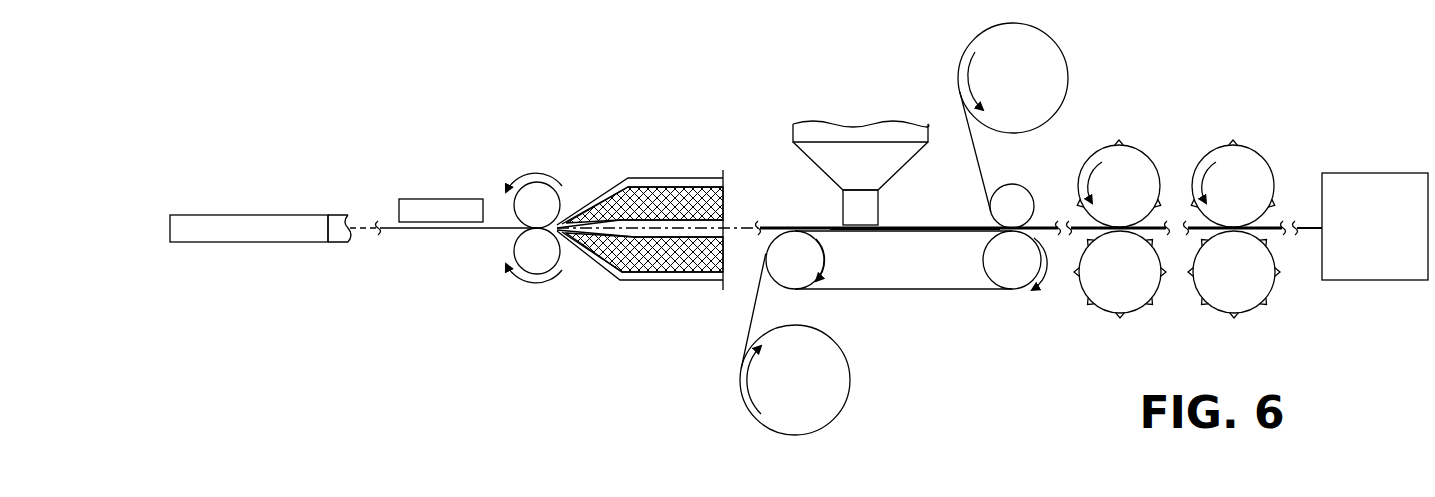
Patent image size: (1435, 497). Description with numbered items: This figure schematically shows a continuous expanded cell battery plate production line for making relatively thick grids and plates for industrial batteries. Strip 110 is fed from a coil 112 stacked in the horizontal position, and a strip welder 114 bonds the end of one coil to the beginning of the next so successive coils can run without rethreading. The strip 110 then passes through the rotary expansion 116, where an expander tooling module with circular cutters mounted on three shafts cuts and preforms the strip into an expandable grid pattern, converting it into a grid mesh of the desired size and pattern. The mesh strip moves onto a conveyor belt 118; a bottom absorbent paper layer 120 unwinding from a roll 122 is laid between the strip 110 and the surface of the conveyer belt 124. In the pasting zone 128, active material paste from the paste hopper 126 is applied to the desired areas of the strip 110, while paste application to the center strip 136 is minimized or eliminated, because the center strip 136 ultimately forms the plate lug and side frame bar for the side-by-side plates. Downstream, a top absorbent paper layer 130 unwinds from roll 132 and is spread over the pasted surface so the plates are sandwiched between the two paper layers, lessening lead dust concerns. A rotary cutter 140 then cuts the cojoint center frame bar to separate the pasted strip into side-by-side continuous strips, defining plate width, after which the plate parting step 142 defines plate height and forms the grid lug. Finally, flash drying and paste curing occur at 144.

The strip 110 is at (437, 230).
The coil 112 is at (276, 243).
The strip welder 114 is at (449, 199).
The rotary expansion 116 is at (636, 175).
The conveyor belt 118 is at (968, 291).
The bottom absorbent paper layer 120 is at (750, 328).
The roll 122 is at (851, 375).
The conveyer belt 124 is at (820, 228).
The paste hopper 126 is at (865, 121).
The pasting zone 128 is at (871, 239).
The top absorbent paper layer 130 is at (980, 160).
The roll 132 is at (1063, 52).
The center strip 136 is at (622, 281).
The rotary cutter 140 is at (1148, 160).
The plate parting step 142 is at (1258, 160).
The paste curing 144 is at (1397, 174).